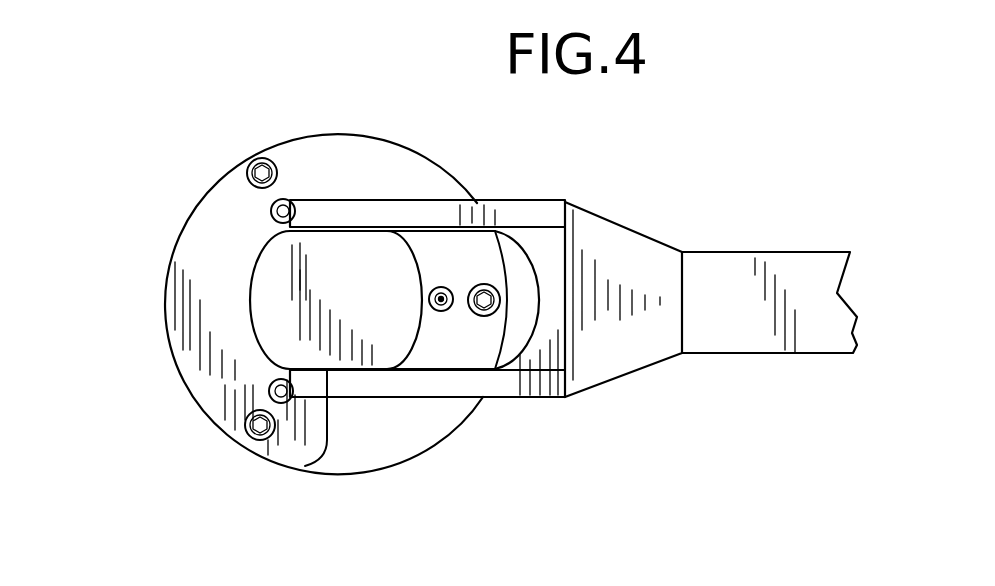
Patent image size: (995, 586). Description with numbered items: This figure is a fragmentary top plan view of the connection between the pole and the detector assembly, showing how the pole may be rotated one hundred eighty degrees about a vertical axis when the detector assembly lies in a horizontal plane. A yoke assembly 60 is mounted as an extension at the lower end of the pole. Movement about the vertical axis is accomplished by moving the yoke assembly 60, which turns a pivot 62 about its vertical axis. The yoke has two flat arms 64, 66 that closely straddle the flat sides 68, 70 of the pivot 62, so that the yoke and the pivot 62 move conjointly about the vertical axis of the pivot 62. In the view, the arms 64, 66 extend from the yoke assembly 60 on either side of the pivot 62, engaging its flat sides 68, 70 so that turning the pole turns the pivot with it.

The yoke assembly 60 is at (726, 272).
The pivot 62 is at (253, 298).
The flat arm 64 is at (385, 388).
The flat arm 66 is at (424, 212).
The flat side 68 is at (304, 459).
The flat side 70 is at (322, 226).